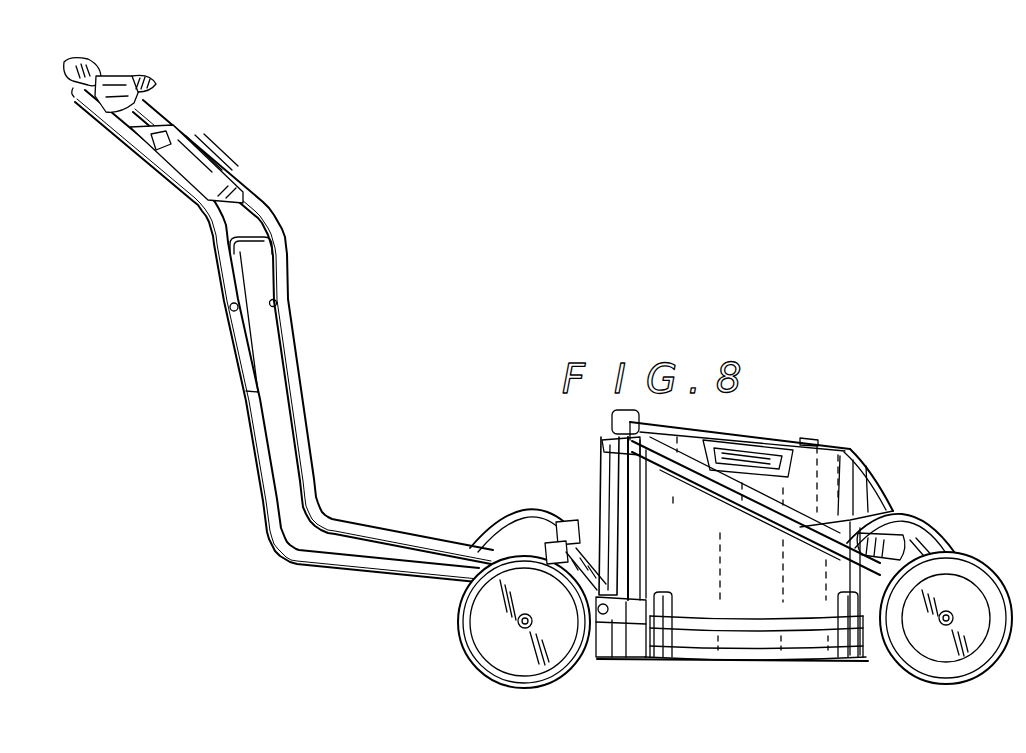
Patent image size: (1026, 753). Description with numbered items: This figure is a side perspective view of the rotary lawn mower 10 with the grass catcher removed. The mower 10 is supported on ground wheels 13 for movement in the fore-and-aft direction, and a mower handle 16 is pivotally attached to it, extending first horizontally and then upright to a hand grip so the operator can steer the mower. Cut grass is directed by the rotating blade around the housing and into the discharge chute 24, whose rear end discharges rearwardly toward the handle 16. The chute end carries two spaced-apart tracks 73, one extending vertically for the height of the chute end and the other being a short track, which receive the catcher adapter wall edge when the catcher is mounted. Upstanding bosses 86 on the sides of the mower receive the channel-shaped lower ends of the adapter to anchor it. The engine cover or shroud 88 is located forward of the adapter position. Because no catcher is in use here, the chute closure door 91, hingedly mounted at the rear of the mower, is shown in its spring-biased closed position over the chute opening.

The lawn mower 10 is at (757, 645).
The ground wheels 13 is at (507, 523).
The mower handle 16 is at (300, 400).
The discharge chute 24 is at (773, 567).
The tracks 73 is at (668, 512).
The upstanding bosses 86 is at (612, 600).
The engine cover or shroud 88 is at (760, 440).
The chute closure door 91 is at (604, 520).